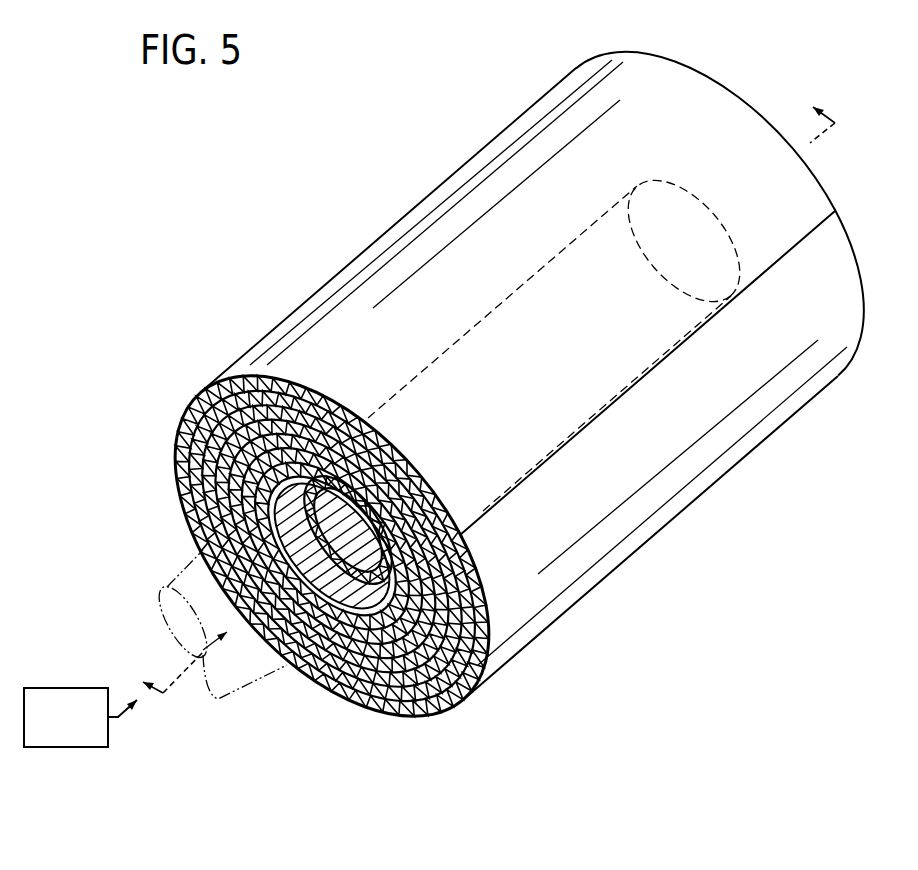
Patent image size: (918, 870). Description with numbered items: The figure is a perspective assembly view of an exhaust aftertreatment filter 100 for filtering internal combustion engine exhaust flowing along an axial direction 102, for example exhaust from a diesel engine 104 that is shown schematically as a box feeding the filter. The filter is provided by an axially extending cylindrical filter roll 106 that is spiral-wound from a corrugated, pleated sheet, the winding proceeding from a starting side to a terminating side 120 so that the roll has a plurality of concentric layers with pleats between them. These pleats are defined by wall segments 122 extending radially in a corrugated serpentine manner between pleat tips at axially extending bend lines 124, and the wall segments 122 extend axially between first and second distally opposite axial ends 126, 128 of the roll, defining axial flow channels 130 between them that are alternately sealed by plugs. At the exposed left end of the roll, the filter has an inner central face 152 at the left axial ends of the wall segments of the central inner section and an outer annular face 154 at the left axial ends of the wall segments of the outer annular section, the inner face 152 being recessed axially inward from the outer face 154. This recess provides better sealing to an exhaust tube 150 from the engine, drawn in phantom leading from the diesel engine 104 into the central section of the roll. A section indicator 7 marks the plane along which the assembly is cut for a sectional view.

The exhaust aftertreatment filter 100 is at (360, 212).
The axial direction 102 is at (176, 671).
The diesel engine 104 is at (68, 688).
The cylindrical filter roll 106 is at (303, 325).
The terminating side 120 is at (652, 371).
The wall segments 122 is at (458, 683).
The axially extending bend lines 124 is at (445, 704).
The first axial end 126 is at (193, 415).
The second axial end 128 is at (665, 56).
The axial flow channels 130 is at (196, 440).
The exhaust tube 150 is at (252, 695).
The inner central face 152 is at (470, 593).
The outer annular face 154 is at (322, 393).
The section line 7 is at (496, 411).